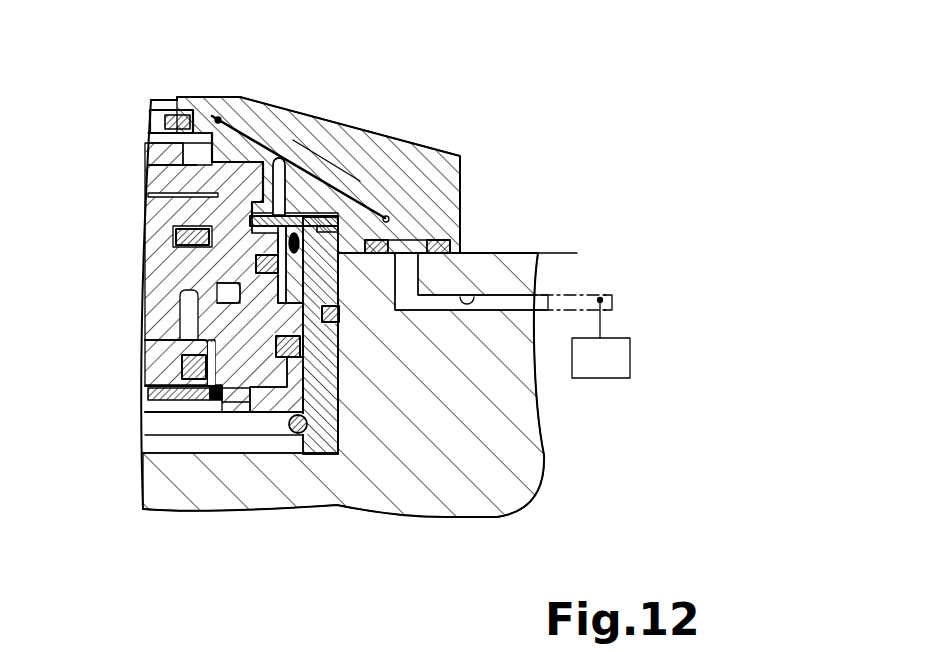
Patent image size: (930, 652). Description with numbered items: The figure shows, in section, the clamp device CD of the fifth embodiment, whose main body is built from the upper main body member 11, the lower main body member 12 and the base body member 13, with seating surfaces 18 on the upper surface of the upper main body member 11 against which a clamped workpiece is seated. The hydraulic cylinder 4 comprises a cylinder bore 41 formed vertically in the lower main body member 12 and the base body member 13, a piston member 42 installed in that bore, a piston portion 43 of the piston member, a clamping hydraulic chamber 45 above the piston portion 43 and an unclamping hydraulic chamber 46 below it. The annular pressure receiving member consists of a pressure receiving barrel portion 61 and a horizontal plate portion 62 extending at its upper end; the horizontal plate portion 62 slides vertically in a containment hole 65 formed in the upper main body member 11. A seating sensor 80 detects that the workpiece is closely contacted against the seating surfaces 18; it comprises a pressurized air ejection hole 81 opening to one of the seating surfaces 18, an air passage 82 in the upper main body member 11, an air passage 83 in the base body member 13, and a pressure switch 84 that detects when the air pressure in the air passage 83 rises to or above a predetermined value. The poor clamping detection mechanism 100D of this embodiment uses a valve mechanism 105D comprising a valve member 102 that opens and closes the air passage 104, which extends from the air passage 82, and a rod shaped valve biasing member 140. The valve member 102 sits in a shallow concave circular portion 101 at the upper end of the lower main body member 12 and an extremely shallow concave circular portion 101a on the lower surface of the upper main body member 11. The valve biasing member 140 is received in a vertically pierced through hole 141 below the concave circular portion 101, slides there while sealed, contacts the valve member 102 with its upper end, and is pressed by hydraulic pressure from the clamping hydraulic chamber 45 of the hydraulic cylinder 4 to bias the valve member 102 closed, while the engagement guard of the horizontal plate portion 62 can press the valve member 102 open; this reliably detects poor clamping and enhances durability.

The hydraulic cylinder 4 is at (194, 446).
The upper main body member 11 is at (430, 148).
The lower main body member 12 is at (338, 405).
The base body member 13 is at (492, 438).
The seating surfaces 18 is at (228, 97).
The cylinder bore 41 is at (268, 350).
The piston member 42 is at (263, 395).
The piston portion 43 is at (180, 440).
The clamping hydraulic chamber 45 is at (328, 456).
The unclamping hydraulic chamber 46 is at (167, 428).
The pressure receiving barrel portion 61 is at (233, 268).
The horizontal plate portion 62 is at (150, 184).
The containment hole 65 is at (267, 100).
The seating sensor 80 is at (169, 38).
The pressurized air ejection hole 81 is at (217, 117).
The air passage 82 is at (393, 218).
The air passage 83 is at (484, 297).
The pressure switch 84 is at (604, 380).
The poor clamping detection mechanism 100D is at (294, 216).
The concave circular portion 101 is at (338, 358).
The concave circular portion 101a is at (313, 214).
The valve member 102 is at (387, 216).
The air passage 104 is at (283, 157).
The valve mechanism 105D is at (247, 219).
The valve biasing member 140 is at (265, 278).
The through hole 141 is at (215, 288).
The clamp device CD is at (534, 78).